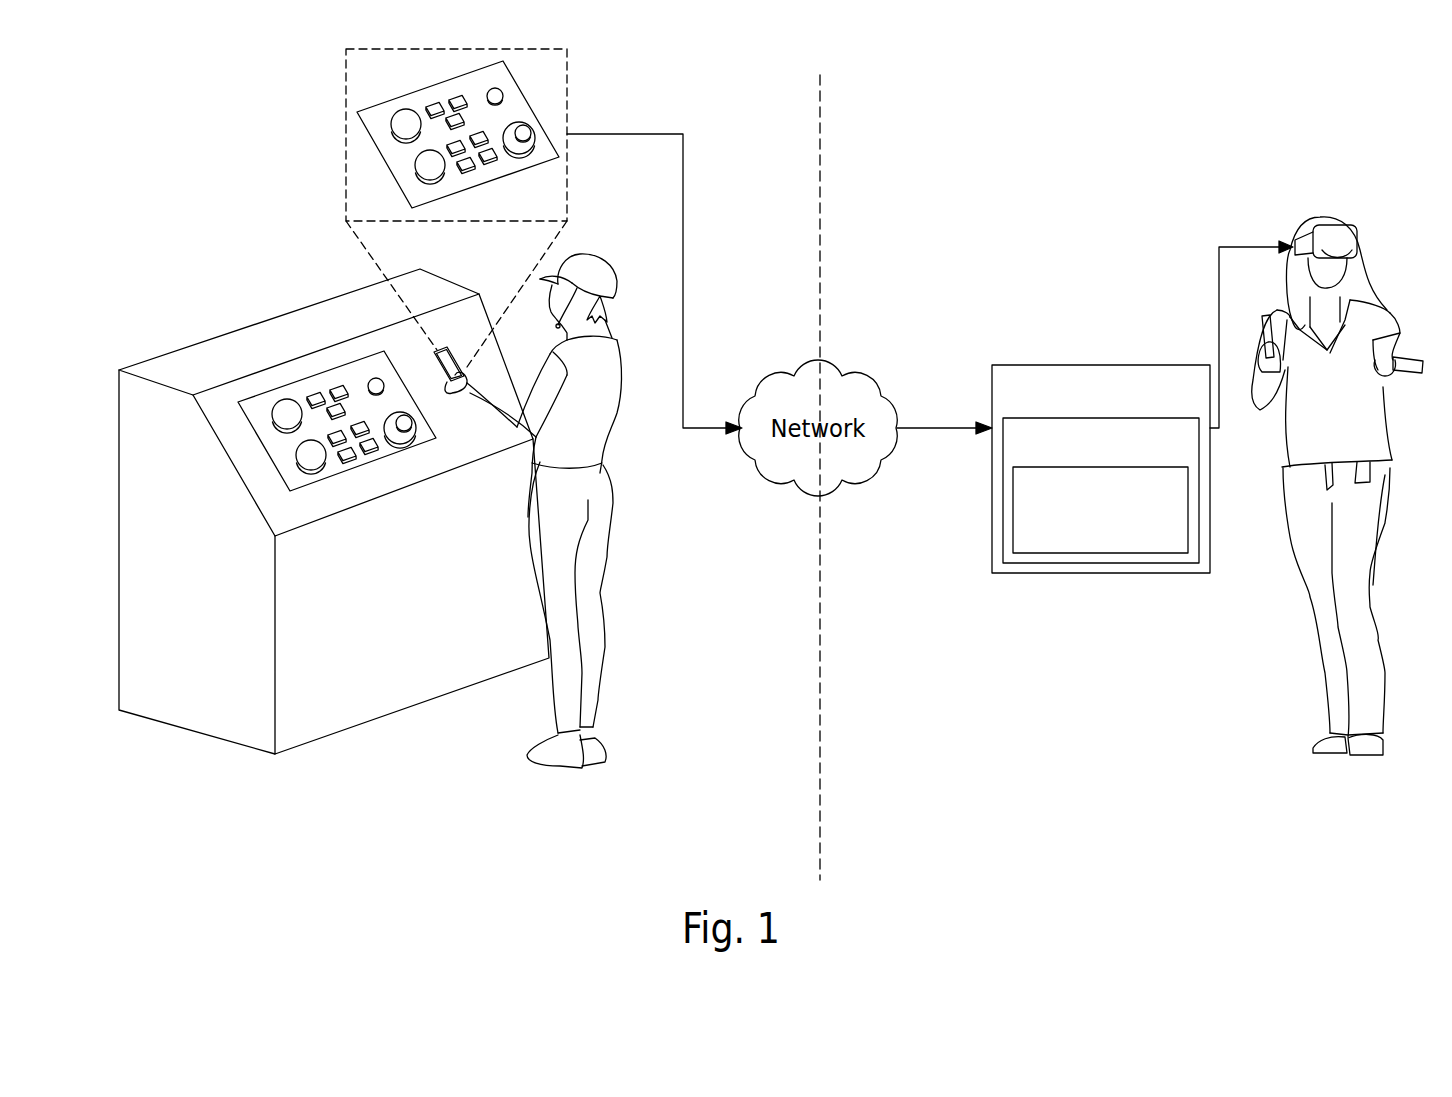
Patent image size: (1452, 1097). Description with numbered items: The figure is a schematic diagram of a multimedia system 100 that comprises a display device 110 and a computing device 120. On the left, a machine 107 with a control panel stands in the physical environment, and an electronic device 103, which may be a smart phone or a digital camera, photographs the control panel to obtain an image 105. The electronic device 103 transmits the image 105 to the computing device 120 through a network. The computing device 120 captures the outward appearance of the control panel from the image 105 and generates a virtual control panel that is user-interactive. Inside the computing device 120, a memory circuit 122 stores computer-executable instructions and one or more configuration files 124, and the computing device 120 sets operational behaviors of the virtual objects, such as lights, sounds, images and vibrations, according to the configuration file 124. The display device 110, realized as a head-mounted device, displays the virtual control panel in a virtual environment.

The multimedia system 100 is at (997, 160).
The electronic device 103 is at (446, 350).
The image 105 is at (346, 183).
The machine 107 is at (222, 343).
The display device 110 is at (1357, 240).
The computing device 120 is at (992, 393).
The memory circuit 122 is at (1003, 448).
The configuration file 124 is at (1013, 498).